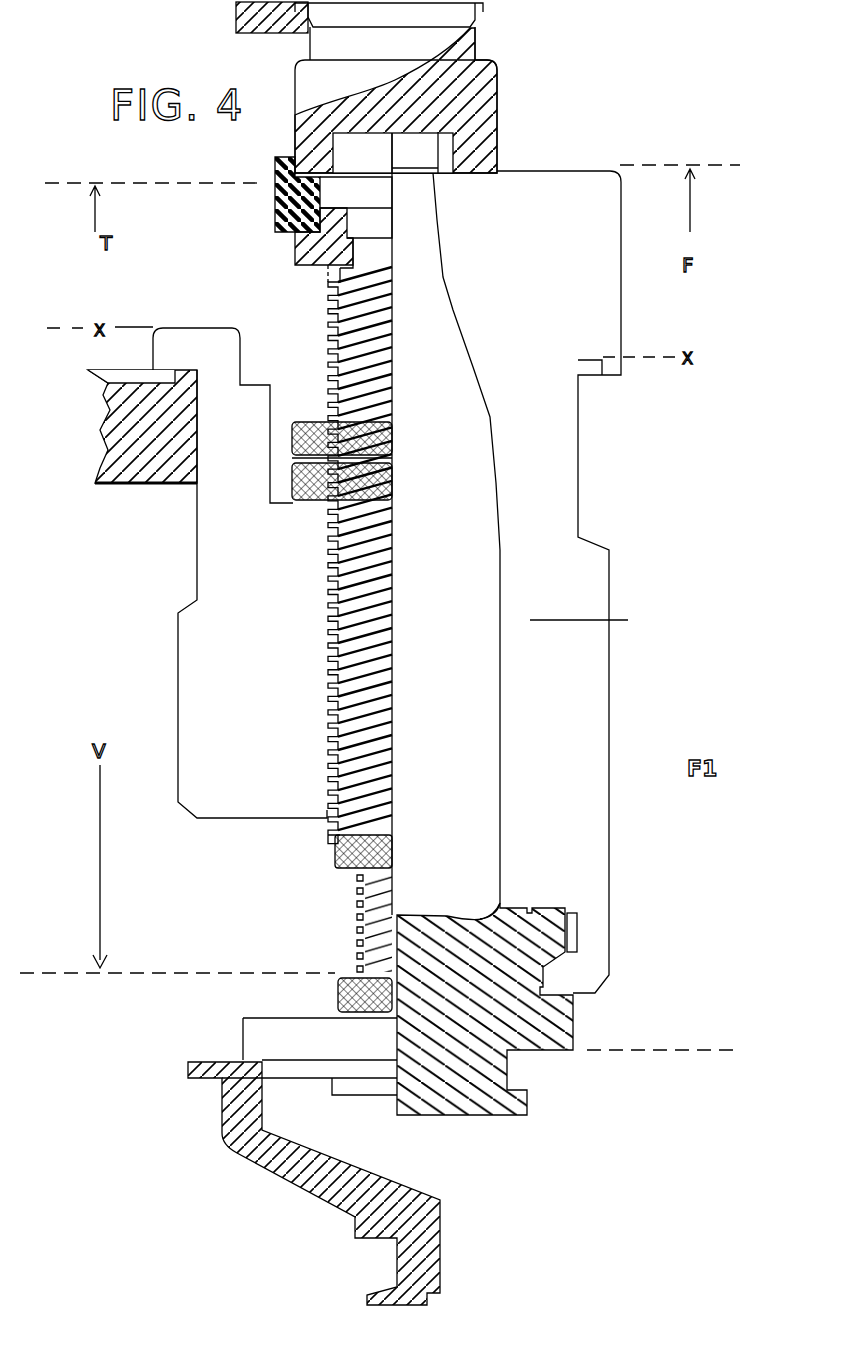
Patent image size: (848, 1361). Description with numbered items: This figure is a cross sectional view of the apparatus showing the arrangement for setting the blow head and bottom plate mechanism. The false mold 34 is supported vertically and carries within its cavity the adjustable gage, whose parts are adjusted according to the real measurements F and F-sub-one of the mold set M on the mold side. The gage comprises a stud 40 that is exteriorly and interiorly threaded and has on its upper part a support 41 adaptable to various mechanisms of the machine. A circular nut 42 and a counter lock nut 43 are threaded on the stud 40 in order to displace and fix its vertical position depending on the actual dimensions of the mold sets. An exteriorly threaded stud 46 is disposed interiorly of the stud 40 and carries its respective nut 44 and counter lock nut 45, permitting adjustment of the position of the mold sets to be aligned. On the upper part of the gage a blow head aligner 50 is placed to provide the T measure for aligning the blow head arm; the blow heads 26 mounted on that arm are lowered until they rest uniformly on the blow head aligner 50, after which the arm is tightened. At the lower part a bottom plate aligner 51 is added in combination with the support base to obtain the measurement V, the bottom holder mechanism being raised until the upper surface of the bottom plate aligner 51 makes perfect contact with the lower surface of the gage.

The blow heads 26 is at (483, 104).
The blow head aligner 50 is at (287, 212).
The support 41 is at (300, 250).
The stud 40 is at (330, 337).
The circular nut 42 is at (292, 442).
The locking nut half 43 is at (292, 492).
The false mold 34 is at (215, 680).
The nut 44 is at (335, 858).
The exteriorly threaded stud 46 is at (360, 903).
The counter lock nut 45 is at (373, 1013).
The bottom plate aligner 51 is at (260, 1040).
The mold set M is at (587, 620).